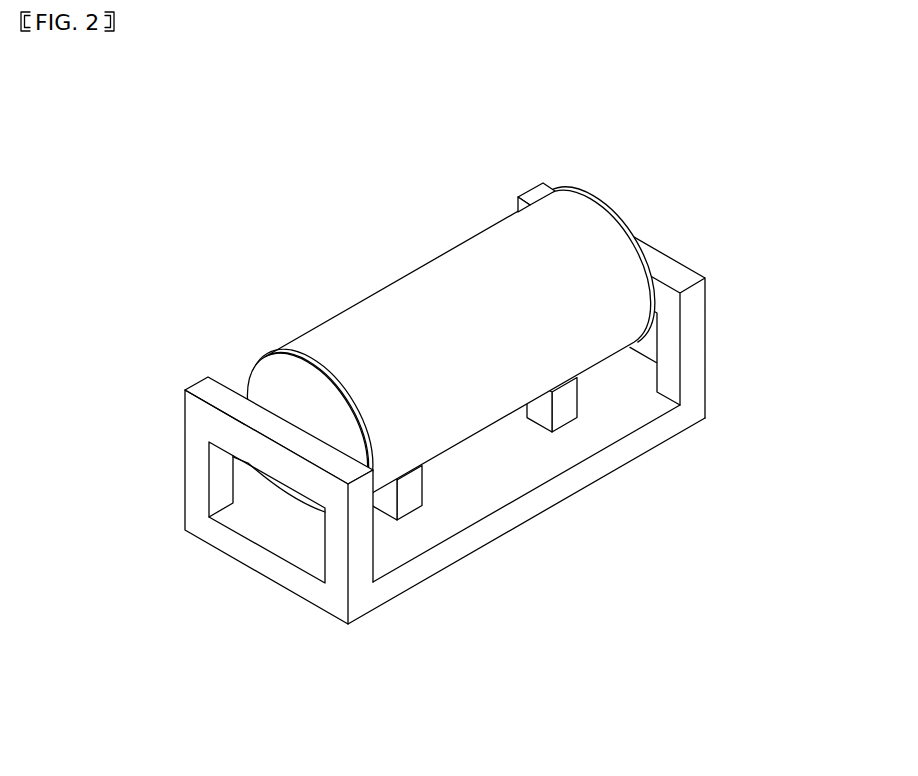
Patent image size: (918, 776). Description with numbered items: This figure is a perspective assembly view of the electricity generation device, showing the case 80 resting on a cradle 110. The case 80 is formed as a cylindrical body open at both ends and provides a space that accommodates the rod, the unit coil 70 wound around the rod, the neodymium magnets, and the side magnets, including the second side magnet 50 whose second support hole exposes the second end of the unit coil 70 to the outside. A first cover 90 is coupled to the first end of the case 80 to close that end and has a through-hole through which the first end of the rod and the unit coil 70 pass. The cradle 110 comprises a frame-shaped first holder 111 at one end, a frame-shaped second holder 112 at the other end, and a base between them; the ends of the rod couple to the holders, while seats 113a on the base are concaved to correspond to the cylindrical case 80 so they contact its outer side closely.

The second side magnet 50 is at (555, 188).
The unit coil 70 is at (637, 229).
The case 80 is at (385, 285).
The first cover 90 is at (266, 382).
The cradle 110 is at (422, 585).
The first holder 111 is at (331, 556).
The second holder 112 is at (697, 335).
The seats 113a is at (408, 488).